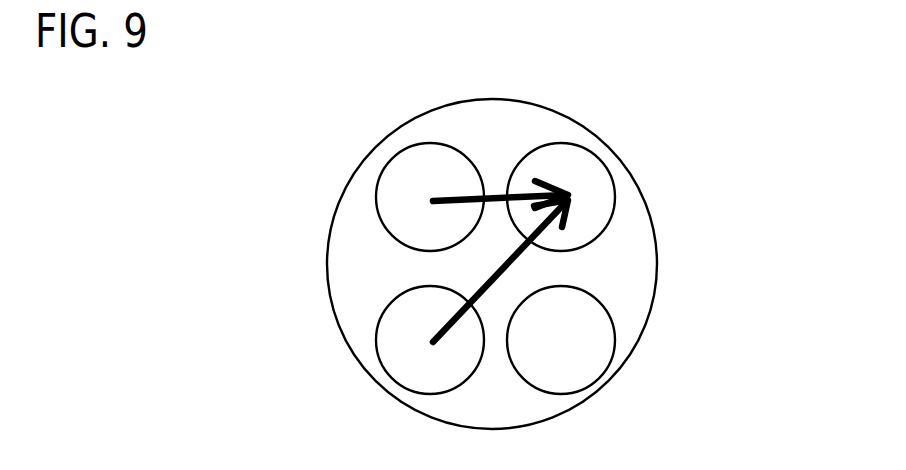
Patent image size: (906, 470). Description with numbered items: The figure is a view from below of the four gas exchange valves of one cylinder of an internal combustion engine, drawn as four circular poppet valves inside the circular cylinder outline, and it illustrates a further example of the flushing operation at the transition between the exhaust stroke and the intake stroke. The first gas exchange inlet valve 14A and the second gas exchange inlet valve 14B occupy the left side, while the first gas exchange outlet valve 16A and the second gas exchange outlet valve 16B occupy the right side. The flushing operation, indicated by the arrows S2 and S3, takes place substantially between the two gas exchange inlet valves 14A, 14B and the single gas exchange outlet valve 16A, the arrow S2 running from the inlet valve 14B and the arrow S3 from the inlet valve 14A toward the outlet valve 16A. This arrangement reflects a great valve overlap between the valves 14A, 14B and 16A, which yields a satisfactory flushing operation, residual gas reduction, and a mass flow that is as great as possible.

The first gas exchange inlet valve 14A is at (356, 351).
The second gas exchange inlet valve 14B is at (353, 210).
The first gas exchange outlet valve 16A is at (642, 185).
The second gas exchange outlet valve 16B is at (647, 336).
The flushing operation arrow S2 is at (423, 151).
The flushing operation arrow S3 is at (570, 323).